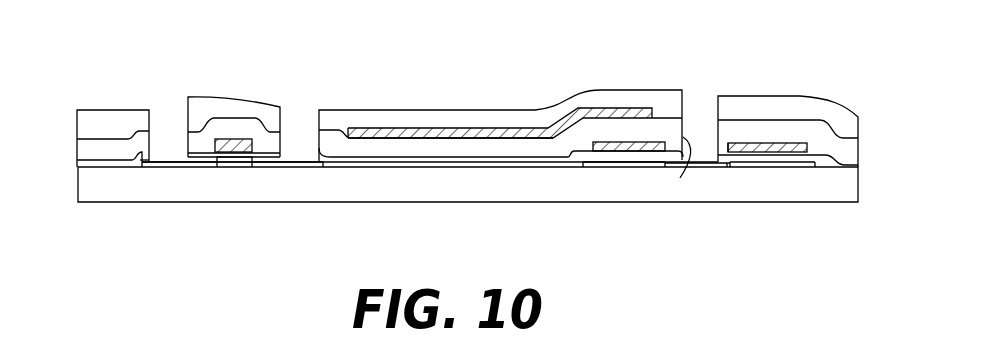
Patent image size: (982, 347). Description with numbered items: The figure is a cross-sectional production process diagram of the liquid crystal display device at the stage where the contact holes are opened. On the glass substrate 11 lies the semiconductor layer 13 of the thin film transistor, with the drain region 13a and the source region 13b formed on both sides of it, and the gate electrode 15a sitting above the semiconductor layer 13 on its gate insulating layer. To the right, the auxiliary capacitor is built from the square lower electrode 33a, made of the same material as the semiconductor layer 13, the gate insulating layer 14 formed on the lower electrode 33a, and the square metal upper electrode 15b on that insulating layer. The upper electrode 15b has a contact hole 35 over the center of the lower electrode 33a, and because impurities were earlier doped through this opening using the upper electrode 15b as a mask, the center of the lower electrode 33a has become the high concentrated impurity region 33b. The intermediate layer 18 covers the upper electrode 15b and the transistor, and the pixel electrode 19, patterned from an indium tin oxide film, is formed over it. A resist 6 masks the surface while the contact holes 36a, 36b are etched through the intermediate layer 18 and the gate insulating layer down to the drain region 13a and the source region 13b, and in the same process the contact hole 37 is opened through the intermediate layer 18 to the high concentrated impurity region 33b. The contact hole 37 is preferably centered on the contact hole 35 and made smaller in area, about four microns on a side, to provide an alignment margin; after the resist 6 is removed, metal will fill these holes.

The resist 6 is at (198, 96).
The glass substrate 11 is at (103, 185).
The semiconductor layer 13 is at (430, 218).
The drain region 13a is at (178, 168).
The source region 13b is at (287, 167).
The gate insulating layer 14 is at (377, 158).
The gate electrode 15a is at (230, 142).
The upper electrode 15b is at (610, 150).
The intermediate layer 18 is at (493, 150).
The pixel electrode 19 is at (435, 128).
The lower electrode 33a is at (633, 167).
The high concentrated impurity region 33b is at (708, 172).
The contact hole 35 is at (727, 147).
The contact hole 36a is at (149, 142).
The contact hole 36b is at (281, 140).
The contact hole 37 is at (680, 178).